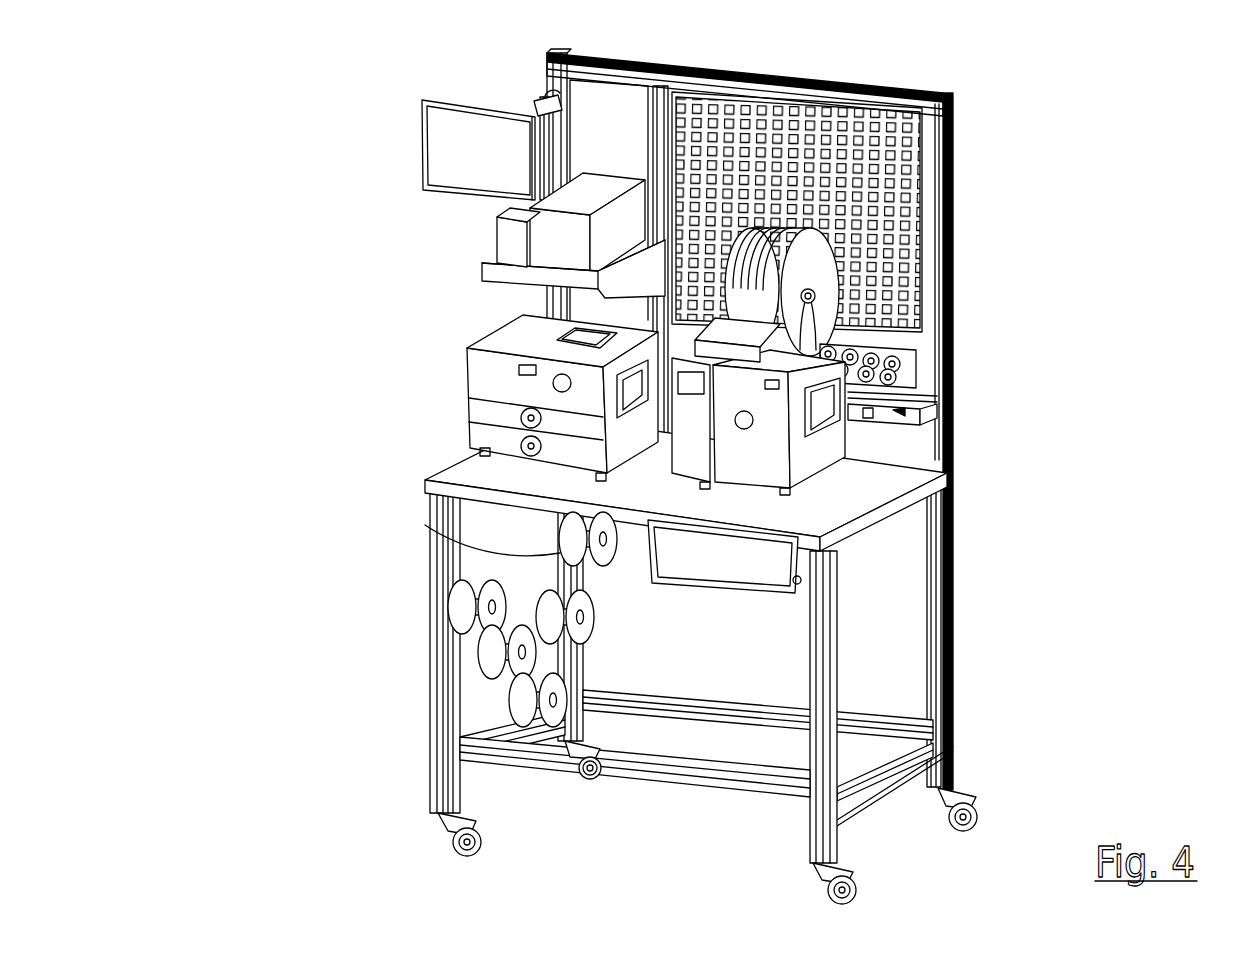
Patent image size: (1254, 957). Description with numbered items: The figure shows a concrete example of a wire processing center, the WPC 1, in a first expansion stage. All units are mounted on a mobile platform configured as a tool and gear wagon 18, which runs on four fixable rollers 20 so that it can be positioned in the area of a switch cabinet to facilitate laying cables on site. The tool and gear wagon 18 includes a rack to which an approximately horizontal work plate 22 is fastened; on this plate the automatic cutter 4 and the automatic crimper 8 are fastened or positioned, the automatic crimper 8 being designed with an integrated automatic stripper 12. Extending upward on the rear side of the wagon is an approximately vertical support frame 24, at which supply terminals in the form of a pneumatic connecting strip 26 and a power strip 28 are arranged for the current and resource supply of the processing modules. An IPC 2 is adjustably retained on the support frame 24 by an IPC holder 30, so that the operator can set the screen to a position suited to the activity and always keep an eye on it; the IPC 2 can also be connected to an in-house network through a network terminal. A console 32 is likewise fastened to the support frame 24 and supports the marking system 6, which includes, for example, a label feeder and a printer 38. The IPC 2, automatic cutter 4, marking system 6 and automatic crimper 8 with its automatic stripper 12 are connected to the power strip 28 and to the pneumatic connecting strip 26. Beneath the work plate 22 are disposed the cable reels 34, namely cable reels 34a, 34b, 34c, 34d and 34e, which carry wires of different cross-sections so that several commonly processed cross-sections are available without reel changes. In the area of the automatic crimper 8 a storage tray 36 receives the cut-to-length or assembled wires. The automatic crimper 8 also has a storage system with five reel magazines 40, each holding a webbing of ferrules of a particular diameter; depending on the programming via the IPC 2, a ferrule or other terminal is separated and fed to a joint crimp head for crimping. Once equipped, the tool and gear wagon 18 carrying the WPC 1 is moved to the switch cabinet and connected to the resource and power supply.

The wire processing center 1 is at (659, 462).
The IPC 2 is at (462, 148).
The automatic cutter 4 is at (500, 388).
The marking system 6 is at (530, 247).
The automatic crimper 8 is at (903, 417).
The automatic stripper 12 is at (770, 463).
The tool and gear wagon 18 is at (437, 790).
The fixable rollers 20 is at (987, 810).
The work plate 22 is at (427, 478).
The support frame 24 is at (945, 208).
The pneumatic connecting strip 26 is at (870, 366).
The power strip 28 is at (952, 412).
The IPC holder 30 is at (532, 99).
The console 32 is at (520, 275).
The cable reels 34 is at (475, 684).
The cable reel 34a is at (450, 626).
The cable reel 34b is at (480, 672).
The cable reel 34c is at (556, 720).
The cable reel 34d is at (590, 632).
The cable reel 34e is at (560, 546).
The storage tray 36 is at (830, 517).
The printer 38 is at (588, 195).
The reel magazines 40 is at (838, 270).